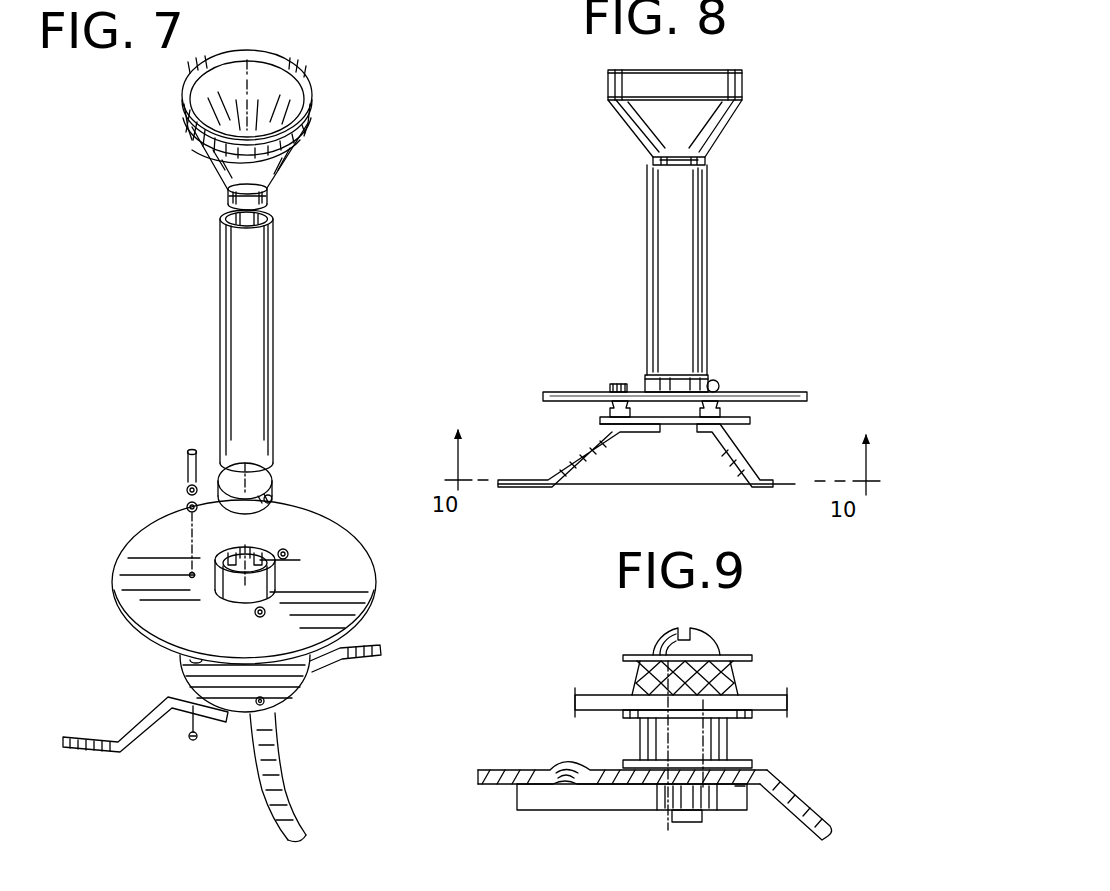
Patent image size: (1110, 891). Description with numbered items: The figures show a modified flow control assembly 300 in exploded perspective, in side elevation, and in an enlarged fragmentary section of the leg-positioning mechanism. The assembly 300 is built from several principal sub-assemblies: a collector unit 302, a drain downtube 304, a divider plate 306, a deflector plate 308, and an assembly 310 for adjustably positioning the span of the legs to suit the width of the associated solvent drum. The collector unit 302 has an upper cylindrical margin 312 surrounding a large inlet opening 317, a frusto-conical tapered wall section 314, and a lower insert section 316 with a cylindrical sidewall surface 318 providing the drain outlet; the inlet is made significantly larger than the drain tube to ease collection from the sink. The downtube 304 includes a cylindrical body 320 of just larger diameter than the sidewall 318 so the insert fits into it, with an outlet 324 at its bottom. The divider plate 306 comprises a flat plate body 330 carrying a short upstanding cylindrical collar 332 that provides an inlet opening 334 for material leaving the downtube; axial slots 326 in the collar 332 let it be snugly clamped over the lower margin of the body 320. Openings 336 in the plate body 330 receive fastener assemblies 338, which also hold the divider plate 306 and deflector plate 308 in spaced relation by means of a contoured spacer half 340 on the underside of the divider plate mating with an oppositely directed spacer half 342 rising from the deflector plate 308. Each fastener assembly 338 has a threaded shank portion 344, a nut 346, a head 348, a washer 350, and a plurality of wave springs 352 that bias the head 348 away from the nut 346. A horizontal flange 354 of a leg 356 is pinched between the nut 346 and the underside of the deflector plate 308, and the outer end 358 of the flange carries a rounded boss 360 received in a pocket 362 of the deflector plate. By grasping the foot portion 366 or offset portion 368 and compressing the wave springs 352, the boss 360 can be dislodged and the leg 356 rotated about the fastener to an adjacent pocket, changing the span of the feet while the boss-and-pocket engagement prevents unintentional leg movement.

In FIG. 7, the flow control assembly 300 is at (362, 172).
In FIG. 8, the flow control assembly 300 is at (603, 143).
In FIG. 7, the collector unit 302 is at (318, 128).
In FIG. 7, the drain downtube 304 is at (290, 333).
In FIG. 7, the divider plate 306 is at (170, 547).
In FIG. 8, the divider plate 306 is at (553, 390).
In FIG. 9, the divider plate 306 is at (787, 700).
In FIG. 7, the deflector plate 308 is at (318, 688).
In FIG. 8, the deflector plate 308 is at (675, 412).
In FIG. 9, the deflector plate 308 is at (760, 775).
In FIG. 7, the leg positioning assembly 310 is at (203, 752).
In FIG. 8, the leg positioning assembly 310 is at (658, 440).
In FIG. 9, the leg positioning assembly 310 is at (640, 822).
In FIG. 7, the upper cylindrical margin 312 is at (200, 137).
In FIG. 8, the upper cylindrical margin 312 is at (608, 80).
In FIG. 7, the tapered wall section 314 is at (212, 168).
In FIG. 8, the tapered wall section 314 is at (718, 128).
In FIG. 7, the lower insert section 316 is at (269, 191).
In FIG. 7, the inlet opening 317 is at (302, 63).
In FIG. 7, the cylindrical sidewall surface 318 is at (226, 198).
In FIG. 8, the cylindrical sidewall surface 318 is at (672, 162).
In FIG. 7, the cylindrical body 320 is at (235, 283).
In FIG. 8, the cylindrical body 320 is at (665, 272).
In FIG. 7, the outlet 324 is at (272, 478).
In FIG. 7, the axial slots 326 is at (284, 560).
In FIG. 8, the axial slots 326 is at (645, 383).
In FIG. 7, the flat plate body 330 is at (352, 540).
In FIG. 7, the cylindrical collar 332 is at (240, 592).
In FIG. 7, the inlet opening 334 is at (232, 553).
In FIG. 7, the openings 336 is at (262, 617).
In FIG. 9, the fastener assembly 338 is at (748, 645).
In FIG. 9, the spacer half 340 is at (640, 723).
In FIG. 9, the spacer half 342 is at (640, 752).
In FIG. 9, the threaded shank portion 344 is at (690, 775).
In FIG. 9, the nut 346 is at (657, 812).
In FIG. 9, the head 348 is at (700, 636).
In FIG. 9, the washer 350 is at (640, 657).
In FIG. 9, the wave springs 352 is at (735, 672).
In FIG. 9, the horizontal flange 354 is at (730, 792).
In FIG. 9, the leg 356 is at (792, 802).
In FIG. 9, the outer end 358 is at (530, 797).
In FIG. 9, the boss 360 is at (575, 785).
In FIG. 9, the pocket 362 is at (562, 786).
In FIG. 7, the foot portion 366 is at (103, 752).
In FIG. 8, the foot portion 366 is at (570, 452).
In FIG. 7, the offset portion 368 is at (135, 720).